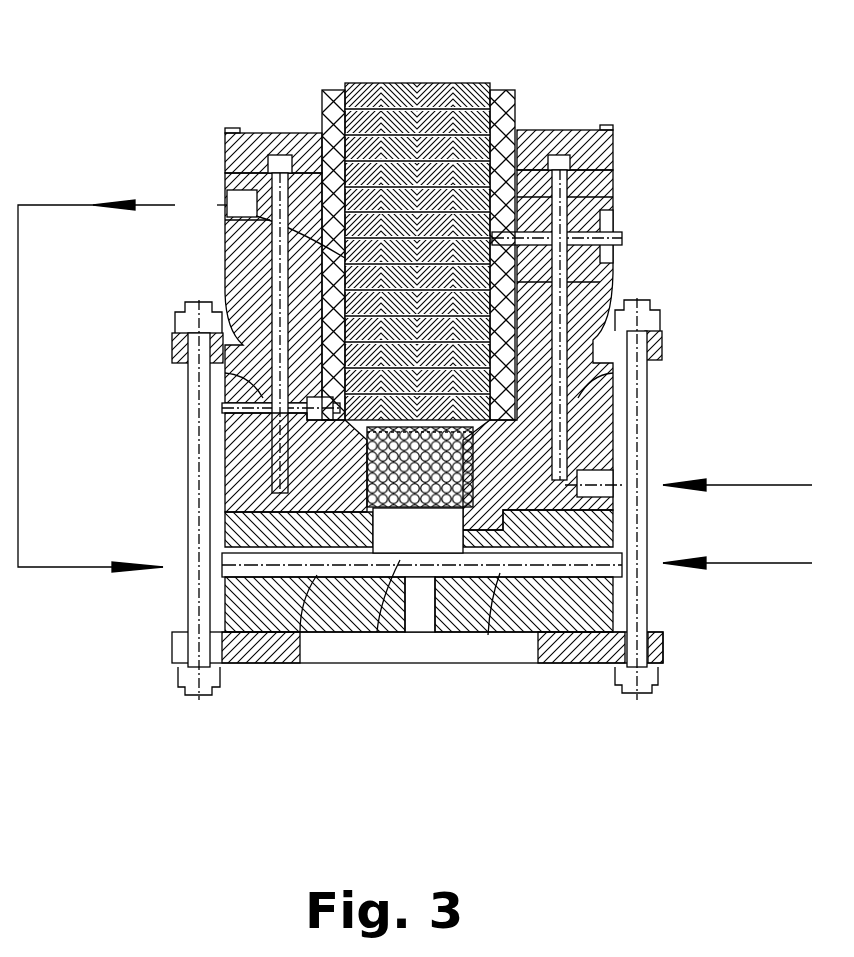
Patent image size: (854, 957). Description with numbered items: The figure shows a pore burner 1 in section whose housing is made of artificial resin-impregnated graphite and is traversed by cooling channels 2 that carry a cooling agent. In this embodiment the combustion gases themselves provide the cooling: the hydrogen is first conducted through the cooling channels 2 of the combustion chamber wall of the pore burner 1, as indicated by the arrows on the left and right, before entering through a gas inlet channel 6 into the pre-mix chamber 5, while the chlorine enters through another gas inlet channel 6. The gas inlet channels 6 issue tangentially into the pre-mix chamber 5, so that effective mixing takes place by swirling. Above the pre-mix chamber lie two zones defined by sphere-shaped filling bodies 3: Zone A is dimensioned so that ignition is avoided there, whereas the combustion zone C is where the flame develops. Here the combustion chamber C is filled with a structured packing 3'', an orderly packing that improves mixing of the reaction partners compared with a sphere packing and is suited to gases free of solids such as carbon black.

The pore burner 1 is at (644, 201).
The cooling channels 2 is at (277, 270).
The sphere-shaped filling bodies 3 is at (309, 467).
The structured packing 3'' is at (418, 216).
The pre-mix chamber 5 is at (373, 670).
The gas inlet channels 6 is at (297, 672).
The Zone A is at (367, 488).
The combustion zone C is at (225, 169).